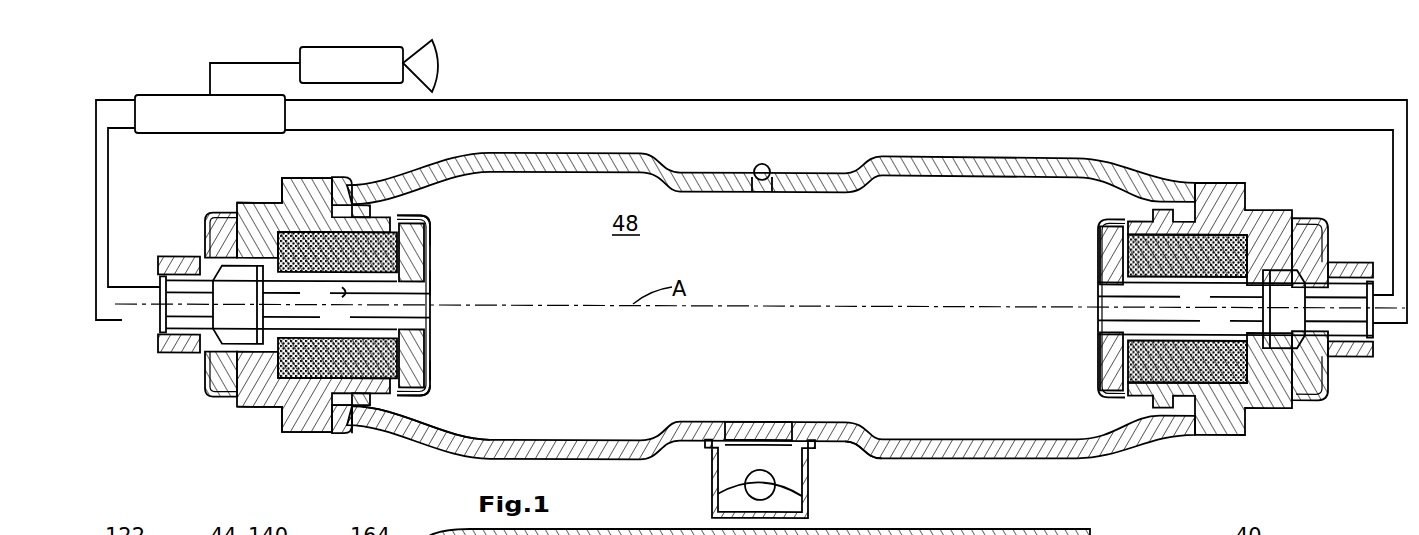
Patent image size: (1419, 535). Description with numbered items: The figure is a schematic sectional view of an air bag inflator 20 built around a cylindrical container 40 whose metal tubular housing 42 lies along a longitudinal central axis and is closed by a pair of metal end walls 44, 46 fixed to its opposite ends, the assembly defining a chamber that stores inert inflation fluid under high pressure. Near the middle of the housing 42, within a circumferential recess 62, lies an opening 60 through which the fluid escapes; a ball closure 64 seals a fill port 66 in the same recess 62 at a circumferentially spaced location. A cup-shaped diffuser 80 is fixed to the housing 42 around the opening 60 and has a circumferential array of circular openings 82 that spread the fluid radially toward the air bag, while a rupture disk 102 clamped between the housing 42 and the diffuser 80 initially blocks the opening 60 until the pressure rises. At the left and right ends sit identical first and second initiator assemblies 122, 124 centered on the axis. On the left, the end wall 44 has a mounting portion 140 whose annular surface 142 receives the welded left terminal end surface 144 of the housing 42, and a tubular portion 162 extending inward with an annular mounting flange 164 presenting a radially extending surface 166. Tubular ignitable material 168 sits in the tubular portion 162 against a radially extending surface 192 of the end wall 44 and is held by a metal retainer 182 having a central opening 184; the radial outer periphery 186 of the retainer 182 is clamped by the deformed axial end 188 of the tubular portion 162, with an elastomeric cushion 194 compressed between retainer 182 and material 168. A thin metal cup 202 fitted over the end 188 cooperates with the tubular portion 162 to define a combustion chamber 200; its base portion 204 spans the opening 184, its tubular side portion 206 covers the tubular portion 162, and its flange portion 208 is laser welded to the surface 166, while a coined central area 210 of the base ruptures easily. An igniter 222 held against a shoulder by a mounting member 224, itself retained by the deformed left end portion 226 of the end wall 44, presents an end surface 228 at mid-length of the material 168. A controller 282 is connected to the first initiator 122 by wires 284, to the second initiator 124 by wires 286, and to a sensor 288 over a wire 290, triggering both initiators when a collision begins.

The inflator 20 is at (1289, 434).
The cylindrical container 40 is at (1201, 175).
The tubular housing 42 is at (816, 171).
The end wall 44 is at (272, 195).
The end wall 46 is at (1251, 206).
The opening 60 is at (790, 437).
The recess 62 is at (861, 455).
The ball closure 64 is at (753, 168).
The fill port 66 is at (765, 163).
The diffuser 80 is at (804, 511).
The circular openings 82 is at (745, 498).
The rupture disk 102 is at (742, 436).
The first initiator assembly 122 is at (206, 193).
The second initiator assembly 124 is at (1341, 253).
The mounting portion 140 is at (297, 178).
The annular surface 142 is at (340, 180).
The left terminal end surface 144 is at (323, 433).
The tubular portion 162 is at (348, 406).
The annular mounting flange 164 is at (361, 203).
The radially extending surface 166 is at (393, 421).
The ignitable material 168 is at (1217, 372).
The retainer 182 is at (430, 240).
The central opening 184 is at (429, 293).
The radial outer periphery 186 is at (421, 382).
The axial end 188 is at (430, 370).
The radially extending surface 192 is at (277, 243).
The elastomeric cushion 194 is at (433, 230).
The combustion chamber 200 is at (386, 328).
The cup 202 is at (437, 315).
The base portion 204 is at (428, 337).
The tubular side portion 206 is at (412, 398).
The flange portion 208 is at (414, 193).
The central area 210 is at (433, 304).
The igniter 222 is at (247, 318).
The mounting member 224 is at (190, 354).
The left end portion 226 is at (203, 377).
The end surface 228 is at (342, 292).
The controller 282 is at (197, 95).
The wires 284 is at (117, 290).
The wires 286 is at (987, 130).
The sensor 288 is at (441, 62).
The wire 290 is at (263, 63).